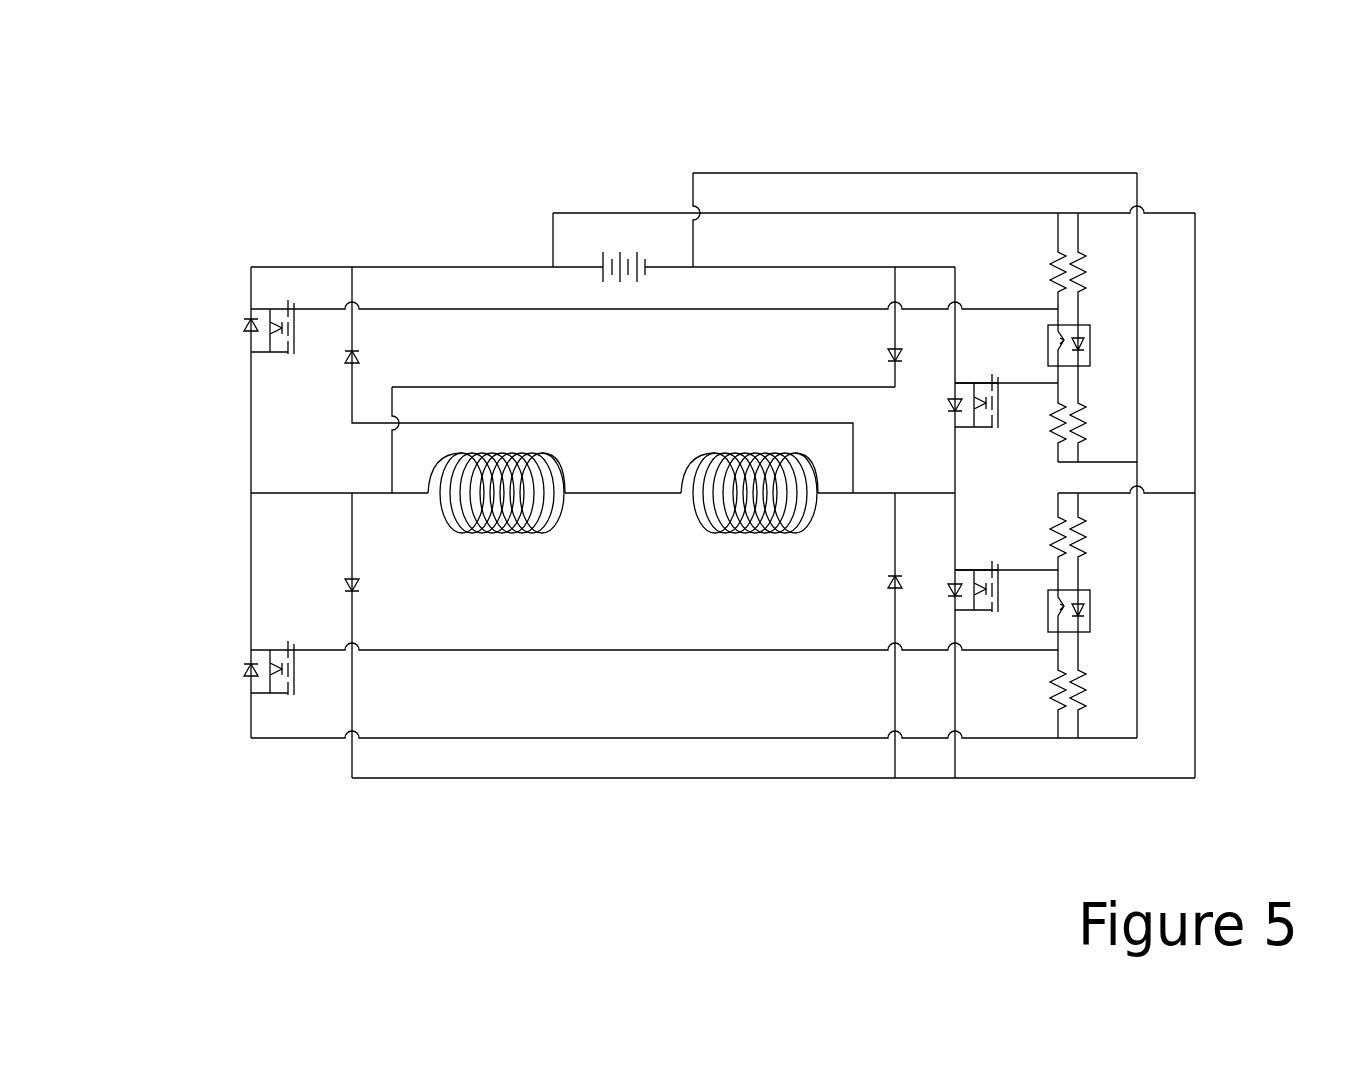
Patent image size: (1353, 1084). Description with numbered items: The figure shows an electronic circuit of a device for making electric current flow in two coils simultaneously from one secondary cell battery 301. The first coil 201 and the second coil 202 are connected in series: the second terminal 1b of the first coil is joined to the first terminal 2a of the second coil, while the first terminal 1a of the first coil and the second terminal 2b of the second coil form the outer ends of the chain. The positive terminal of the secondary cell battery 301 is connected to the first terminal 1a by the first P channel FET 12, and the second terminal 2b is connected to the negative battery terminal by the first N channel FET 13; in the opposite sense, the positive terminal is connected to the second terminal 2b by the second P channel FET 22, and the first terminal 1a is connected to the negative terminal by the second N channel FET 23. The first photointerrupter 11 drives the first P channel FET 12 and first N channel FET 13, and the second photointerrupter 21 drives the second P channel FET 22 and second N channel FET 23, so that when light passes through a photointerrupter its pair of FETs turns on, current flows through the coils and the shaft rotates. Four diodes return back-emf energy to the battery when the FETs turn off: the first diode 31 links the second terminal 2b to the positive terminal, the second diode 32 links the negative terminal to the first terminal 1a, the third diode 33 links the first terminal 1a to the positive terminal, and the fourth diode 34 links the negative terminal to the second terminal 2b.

The first photointerrupter 11 is at (1097, 330).
The first P channel FET 12 is at (237, 326).
The first N channel FET 13 is at (967, 377).
The second photointerrupter 21 is at (1097, 593).
The second P channel FET 22 is at (977, 620).
The second N channel FET 23 is at (233, 672).
The first diode 31 is at (372, 350).
The second diode 32 is at (873, 347).
The third diode 33 is at (335, 582).
The fourth diode 34 is at (878, 598).
The first coil 201 is at (490, 538).
The second coil 202 is at (755, 538).
The secondary cell battery 301 is at (624, 243).
The first terminal of the first coil 1a is at (402, 525).
The second terminal of the first coil 1b is at (579, 525).
The first terminal of the second coil 2a is at (662, 525).
The second terminal of the second coil 2b is at (842, 525).